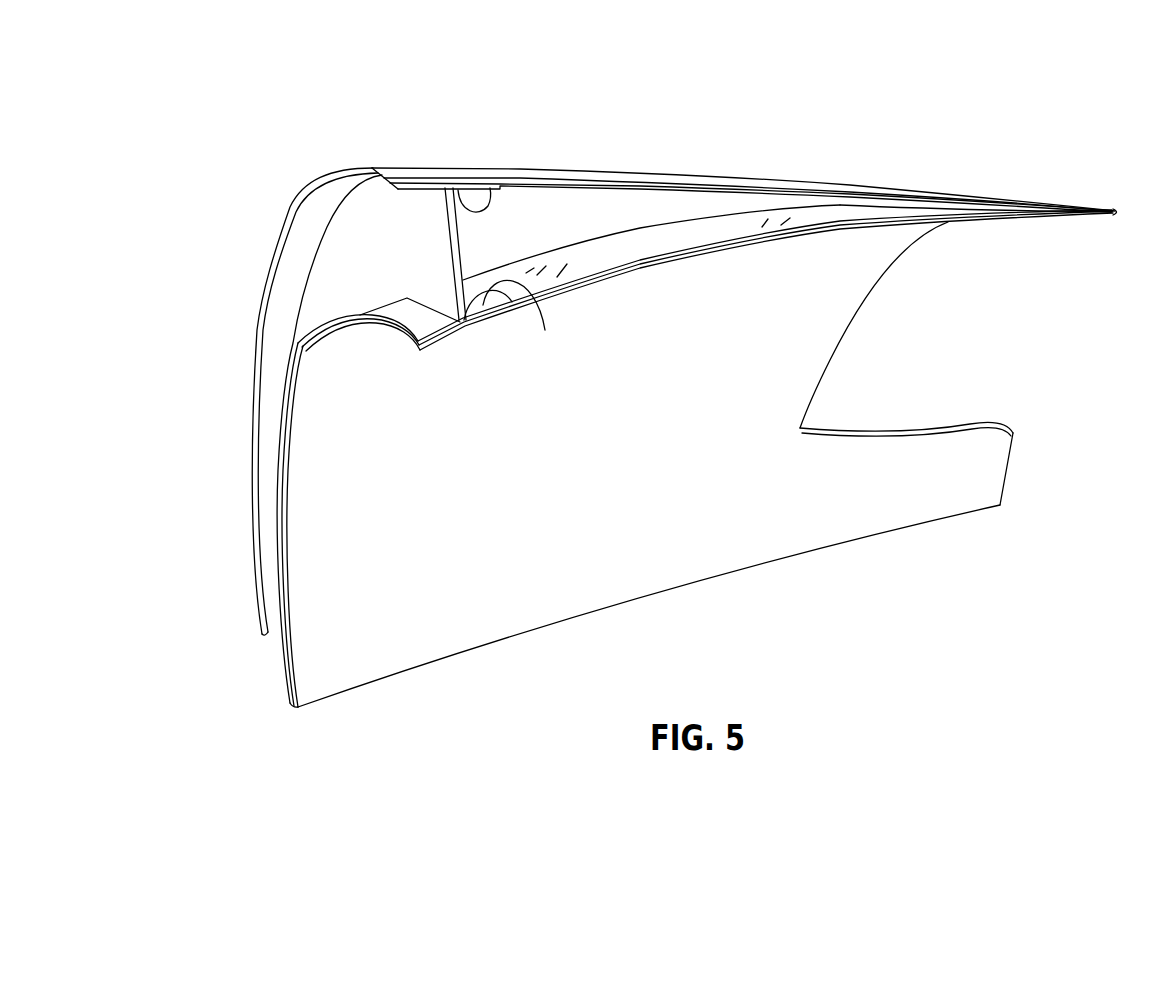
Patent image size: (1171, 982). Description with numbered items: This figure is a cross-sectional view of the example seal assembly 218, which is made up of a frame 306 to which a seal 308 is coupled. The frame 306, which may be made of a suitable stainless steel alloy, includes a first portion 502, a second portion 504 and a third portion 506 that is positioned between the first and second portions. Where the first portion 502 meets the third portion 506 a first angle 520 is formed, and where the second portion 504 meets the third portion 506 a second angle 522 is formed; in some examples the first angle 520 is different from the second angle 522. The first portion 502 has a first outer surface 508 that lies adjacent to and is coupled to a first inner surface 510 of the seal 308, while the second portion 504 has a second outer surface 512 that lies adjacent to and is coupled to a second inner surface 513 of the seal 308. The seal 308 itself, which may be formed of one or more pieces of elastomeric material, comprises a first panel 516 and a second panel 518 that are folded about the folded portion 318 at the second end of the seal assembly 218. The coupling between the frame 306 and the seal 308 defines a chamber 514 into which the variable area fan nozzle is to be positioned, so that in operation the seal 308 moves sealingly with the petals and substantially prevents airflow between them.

The seal assembly 218 is at (537, 125).
The frame 306 is at (257, 339).
The seal 308 is at (643, 169).
The folded portion 318 is at (1110, 208).
The first portion 502 is at (424, 352).
The second portion 504 is at (433, 184).
The third portion 506 is at (399, 283).
The first outer surface 508 is at (480, 327).
The first inner surface 510 is at (552, 283).
The second outer surface 512 is at (407, 181).
The second inner surface 513 is at (578, 178).
The chamber 514 is at (710, 207).
The first panel 516 is at (657, 262).
The second panel 518 is at (800, 192).
The first angle 520 is at (553, 283).
The second angle 522 is at (487, 207).